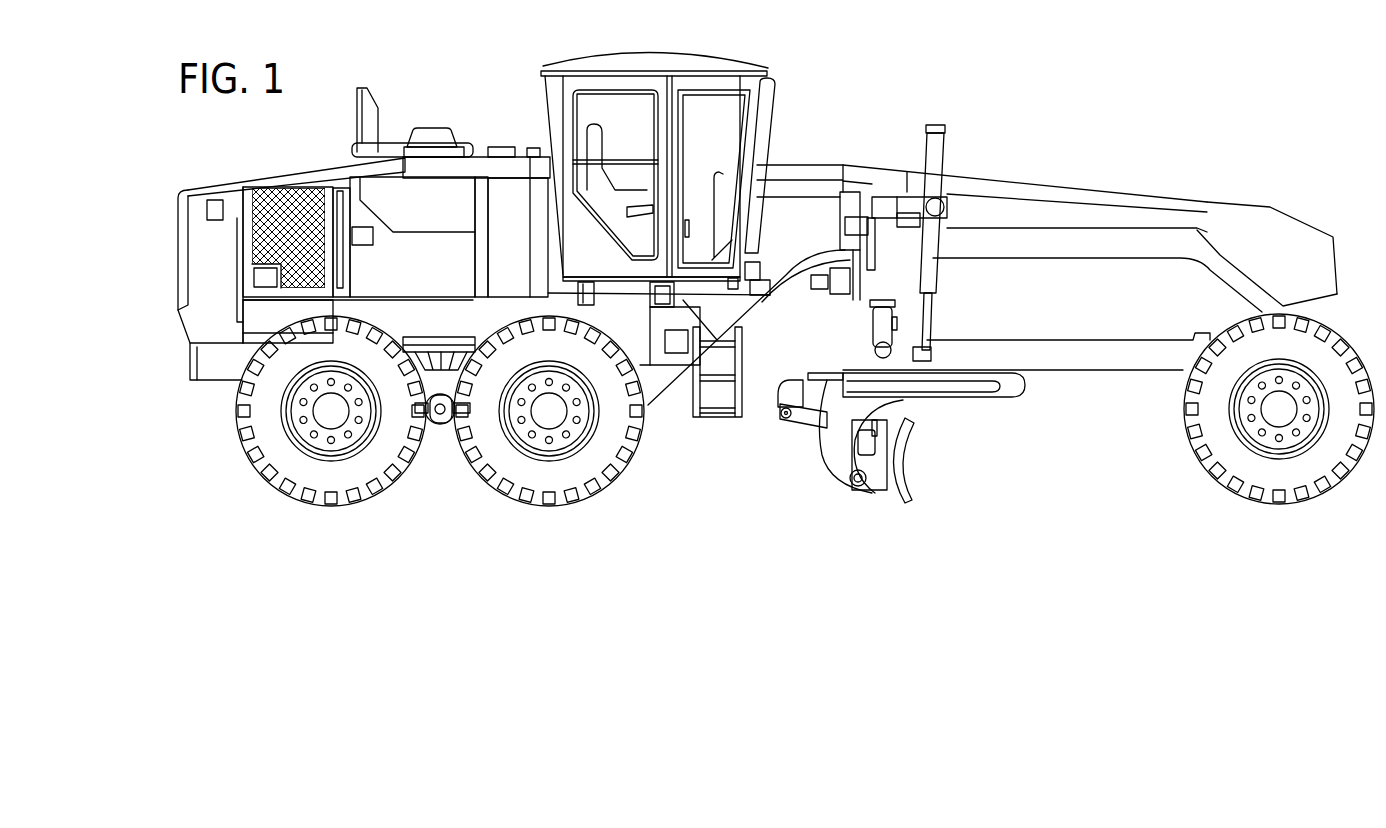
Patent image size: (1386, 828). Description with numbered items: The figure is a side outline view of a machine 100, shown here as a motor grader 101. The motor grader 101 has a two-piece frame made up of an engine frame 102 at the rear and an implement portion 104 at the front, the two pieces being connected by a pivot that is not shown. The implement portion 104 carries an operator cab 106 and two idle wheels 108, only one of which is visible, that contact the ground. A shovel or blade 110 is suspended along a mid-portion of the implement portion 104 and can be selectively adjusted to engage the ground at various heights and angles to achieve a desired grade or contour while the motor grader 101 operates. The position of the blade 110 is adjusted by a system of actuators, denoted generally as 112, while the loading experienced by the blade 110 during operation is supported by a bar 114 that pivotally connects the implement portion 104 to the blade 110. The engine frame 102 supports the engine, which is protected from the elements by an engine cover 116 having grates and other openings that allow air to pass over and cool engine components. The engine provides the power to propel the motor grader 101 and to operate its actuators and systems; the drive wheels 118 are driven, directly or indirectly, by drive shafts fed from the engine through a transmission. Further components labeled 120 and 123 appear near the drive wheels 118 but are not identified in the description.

The machine 100 is at (1037, 112).
The motor grader 101 is at (822, 105).
The engine frame 102 is at (217, 364).
The implement portion 104 is at (1228, 218).
The operator cab 106 is at (583, 67).
The idle wheels 108 is at (1210, 432).
The blade 110 is at (893, 465).
The system of actuators 112 is at (867, 312).
The bar 114 is at (978, 352).
The engine cover 116 is at (292, 222).
The wheels 118 is at (303, 468).
The tandem axle housing 120 is at (443, 440).
The tandem pivot 123 is at (435, 428).